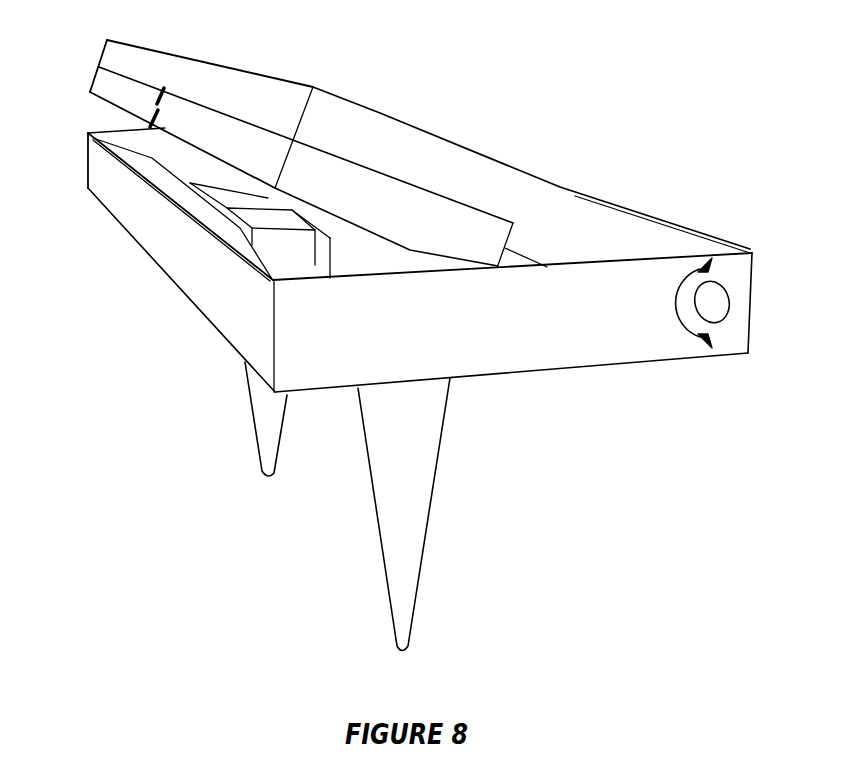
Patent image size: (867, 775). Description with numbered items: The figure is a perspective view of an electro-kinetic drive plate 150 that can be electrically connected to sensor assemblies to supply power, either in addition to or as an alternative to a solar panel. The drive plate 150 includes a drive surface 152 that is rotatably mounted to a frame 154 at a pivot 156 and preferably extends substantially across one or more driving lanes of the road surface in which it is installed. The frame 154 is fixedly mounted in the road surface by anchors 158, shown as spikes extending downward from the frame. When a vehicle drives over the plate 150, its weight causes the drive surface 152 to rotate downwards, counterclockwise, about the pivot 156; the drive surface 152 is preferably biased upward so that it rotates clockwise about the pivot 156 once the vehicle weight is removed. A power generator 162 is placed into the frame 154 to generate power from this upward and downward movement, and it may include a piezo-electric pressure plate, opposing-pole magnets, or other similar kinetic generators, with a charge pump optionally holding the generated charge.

The electro-kinetic drive plate 150 is at (444, 340).
The drive surface 152 is at (441, 134).
The frame 154 is at (157, 262).
The pivot 156 is at (729, 305).
The anchors 158 is at (258, 428).
The power generator 162 is at (363, 250).